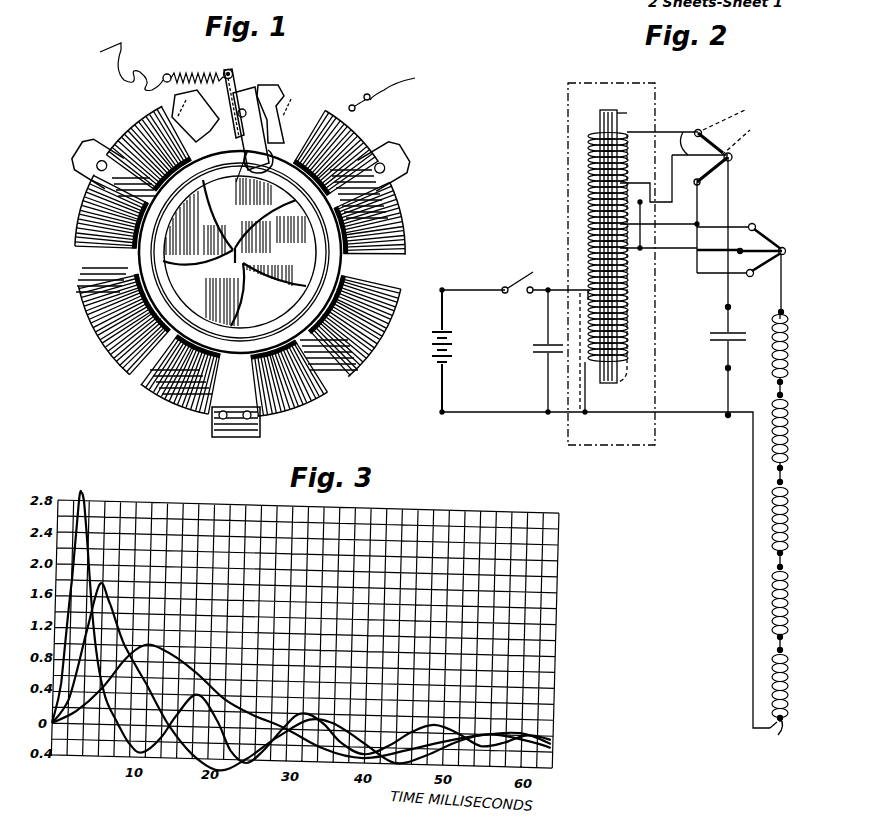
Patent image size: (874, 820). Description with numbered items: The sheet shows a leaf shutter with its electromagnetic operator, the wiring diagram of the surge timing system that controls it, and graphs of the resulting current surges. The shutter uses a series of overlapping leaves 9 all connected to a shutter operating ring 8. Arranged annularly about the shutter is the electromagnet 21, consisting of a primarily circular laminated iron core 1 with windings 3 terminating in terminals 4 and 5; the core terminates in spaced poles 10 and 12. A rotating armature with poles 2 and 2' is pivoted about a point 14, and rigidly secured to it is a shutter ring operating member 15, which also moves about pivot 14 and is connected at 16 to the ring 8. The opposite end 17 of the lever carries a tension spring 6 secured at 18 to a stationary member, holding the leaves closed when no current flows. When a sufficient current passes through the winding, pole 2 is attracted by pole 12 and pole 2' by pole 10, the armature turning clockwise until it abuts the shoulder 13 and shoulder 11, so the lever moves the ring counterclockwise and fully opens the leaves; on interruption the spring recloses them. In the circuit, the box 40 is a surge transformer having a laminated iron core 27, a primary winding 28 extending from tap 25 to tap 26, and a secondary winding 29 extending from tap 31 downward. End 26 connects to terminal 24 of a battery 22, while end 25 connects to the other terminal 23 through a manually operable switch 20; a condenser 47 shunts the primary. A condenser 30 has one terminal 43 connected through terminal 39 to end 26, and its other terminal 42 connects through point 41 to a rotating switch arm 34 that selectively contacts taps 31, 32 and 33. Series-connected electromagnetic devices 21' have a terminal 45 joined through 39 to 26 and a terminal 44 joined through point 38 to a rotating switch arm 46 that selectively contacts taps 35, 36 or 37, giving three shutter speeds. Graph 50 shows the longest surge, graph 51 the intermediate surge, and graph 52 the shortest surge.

In FIG. 1, the laminated iron core 1 is at (397, 180).
In FIG. 1, the armature pole 2 is at (259, 93).
In FIG. 1, the armature pole 2' is at (226, 199).
In FIG. 1, the windings 3 is at (347, 132).
In FIG. 1, the terminal 4 is at (122, 66).
In FIG. 1, the terminal 5 is at (388, 88).
In FIG. 1, the tension spring 6 is at (194, 70).
In FIG. 1, the shutter operating ring 8 is at (327, 230).
In FIG. 1, the shutter leaves 9 is at (239, 252).
In FIG. 1, the pole 10 is at (195, 116).
In FIG. 1, the shoulder 11 is at (180, 128).
In FIG. 1, the pole 12 is at (280, 114).
In FIG. 1, the shoulder 13 is at (258, 148).
In FIG. 1, the pivot 14 is at (246, 111).
In FIG. 1, the shutter ring operating member 15 is at (255, 152).
In FIG. 1, the connection 16 is at (280, 227).
In FIG. 1, the lever end 17 is at (232, 72).
In FIG. 1, the spring anchorage 18 is at (163, 74).
In FIG. 2, the manually operable switch 20 is at (520, 268).
In FIG. 1, the electromagnet 21 is at (262, 261).
In FIG. 2, the electromagnet 21 is at (794, 355).
In FIG. 2, the electromagnetic devices 21' is at (795, 561).
In FIG. 2, the battery 22 is at (452, 341).
In FIG. 2, the battery terminal 23 is at (443, 285).
In FIG. 2, the battery terminal 24 is at (442, 412).
In FIG. 2, the tap 25 is at (585, 292).
In FIG. 2, the tap 26 is at (583, 413).
In FIG. 2, the laminated iron core 27 is at (620, 115).
In FIG. 2, the primary winding 28 is at (580, 347).
In FIG. 2, the secondary winding 29 is at (633, 290).
In FIG. 2, the condenser 30 is at (713, 338).
In FIG. 2, the tap 31 is at (625, 130).
In FIG. 2, the tap 32 is at (595, 183).
In FIG. 2, the tap 33 is at (740, 183).
In FIG. 2, the rotating switch arm 34 is at (747, 136).
In FIG. 2, the tap 35 is at (754, 225).
In FIG. 2, the tap 36 is at (773, 240).
In FIG. 2, the tap 37 is at (748, 275).
In FIG. 2, the pivot point 38 is at (785, 253).
In FIG. 2, the terminal 39 is at (723, 418).
In FIG. 2, the surge transformer 40 is at (623, 83).
In FIG. 2, the pivot point 41 is at (732, 158).
In FIG. 2, the condenser terminal 42 is at (729, 307).
In FIG. 2, the condenser terminal 43 is at (725, 369).
In FIG. 2, the terminal 44 is at (783, 312).
In FIG. 2, the terminal 45 is at (782, 737).
In FIG. 2, the rotating switch arm 46 is at (773, 263).
In FIG. 2, the condenser 47 is at (543, 352).
In FIG. 3, the graph 50 is at (233, 698).
In FIG. 3, the graph 51 is at (117, 605).
In FIG. 3, the graph 52 is at (85, 542).